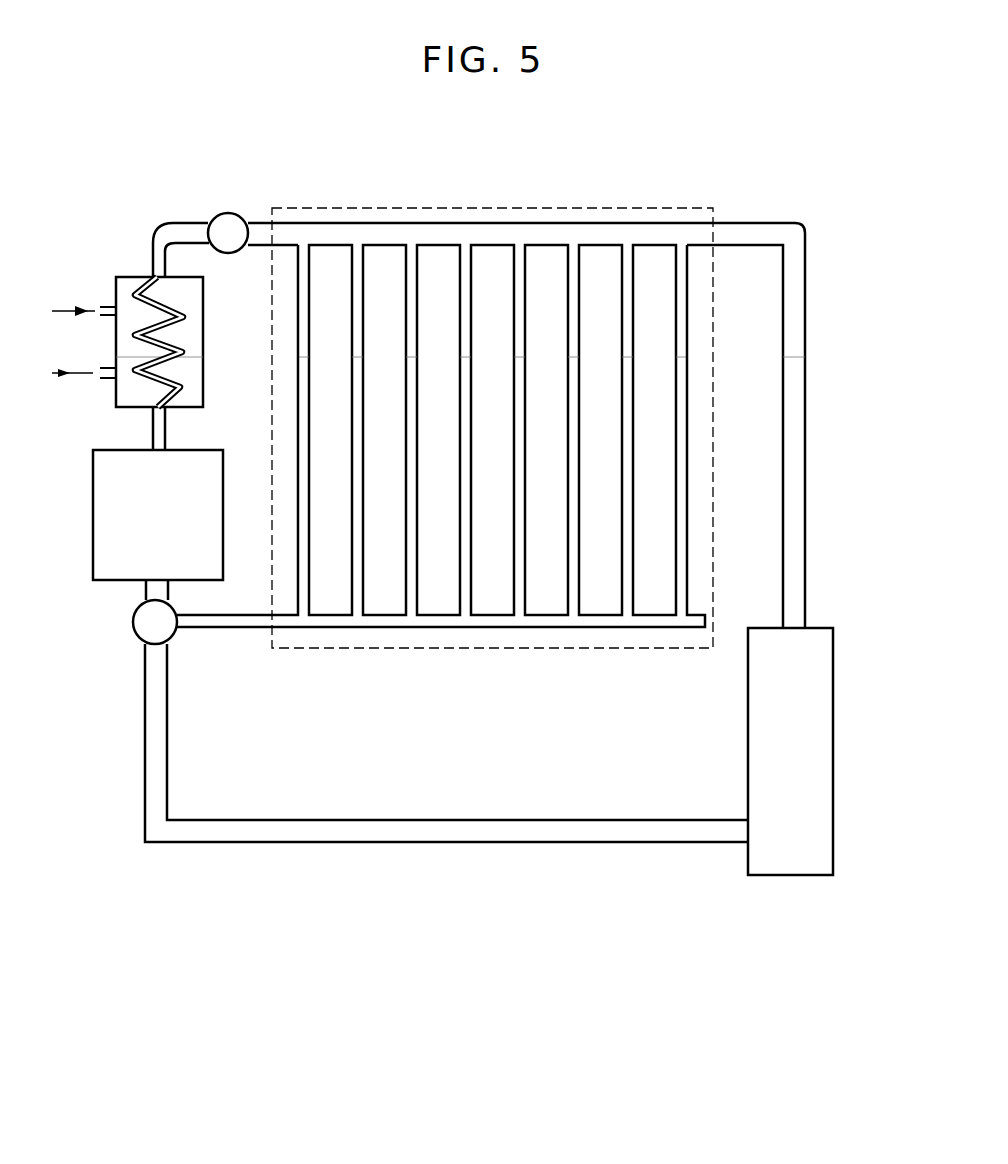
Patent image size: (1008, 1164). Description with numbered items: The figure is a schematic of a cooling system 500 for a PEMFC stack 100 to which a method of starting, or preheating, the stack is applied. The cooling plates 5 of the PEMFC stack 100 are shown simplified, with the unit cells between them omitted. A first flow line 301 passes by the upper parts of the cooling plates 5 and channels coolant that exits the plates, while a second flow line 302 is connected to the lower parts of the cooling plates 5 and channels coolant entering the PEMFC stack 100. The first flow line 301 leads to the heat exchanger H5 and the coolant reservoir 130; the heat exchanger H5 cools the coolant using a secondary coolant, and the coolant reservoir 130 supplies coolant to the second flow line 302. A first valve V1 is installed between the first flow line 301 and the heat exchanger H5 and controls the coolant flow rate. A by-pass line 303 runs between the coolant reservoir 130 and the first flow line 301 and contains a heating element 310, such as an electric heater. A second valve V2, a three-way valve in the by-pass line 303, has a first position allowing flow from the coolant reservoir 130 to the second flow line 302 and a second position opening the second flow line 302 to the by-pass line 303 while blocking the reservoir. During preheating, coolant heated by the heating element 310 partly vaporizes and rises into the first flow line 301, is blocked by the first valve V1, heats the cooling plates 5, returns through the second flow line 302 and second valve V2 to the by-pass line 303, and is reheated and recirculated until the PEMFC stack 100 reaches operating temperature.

The PEMFC stack 100 is at (427, 208).
The first flow line 301 is at (467, 235).
The cooling plates 5 is at (518, 290).
The second flow line 302 is at (332, 620).
The by-pass line 303 is at (467, 843).
The heating element 310 is at (835, 713).
The coolant reservoir 130 is at (102, 577).
The heat exchanger H5 is at (115, 397).
The first valve V1 is at (228, 233).
The second valve V2 is at (155, 622).
The cooling system 500 is at (345, 948).